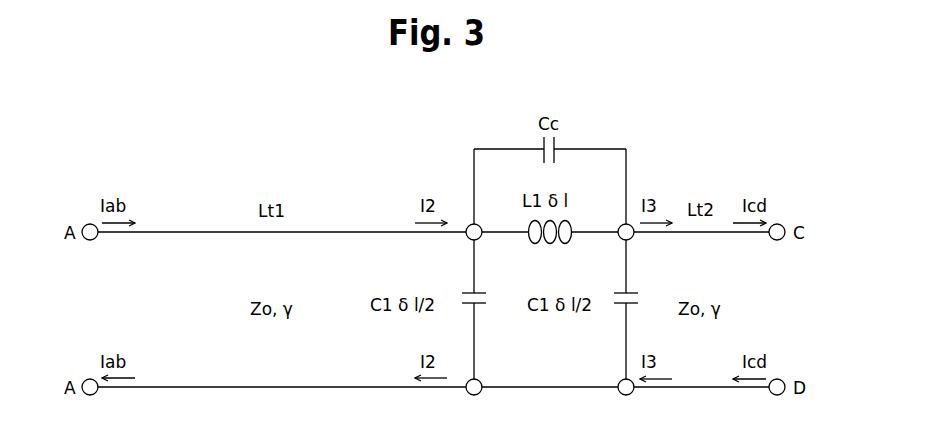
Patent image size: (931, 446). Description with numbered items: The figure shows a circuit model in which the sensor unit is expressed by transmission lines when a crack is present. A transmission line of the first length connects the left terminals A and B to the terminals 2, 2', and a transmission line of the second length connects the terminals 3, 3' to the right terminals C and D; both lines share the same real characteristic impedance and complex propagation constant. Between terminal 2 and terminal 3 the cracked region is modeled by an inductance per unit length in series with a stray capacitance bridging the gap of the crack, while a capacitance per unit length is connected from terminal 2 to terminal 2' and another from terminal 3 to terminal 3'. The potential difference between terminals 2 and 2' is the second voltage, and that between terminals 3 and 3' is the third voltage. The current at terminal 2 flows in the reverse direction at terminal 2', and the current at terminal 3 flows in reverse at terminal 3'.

The terminal 2 is at (469, 221).
The terminal 3 is at (621, 221).
The terminal 2' is at (466, 398).
The terminal 3' is at (618, 398).